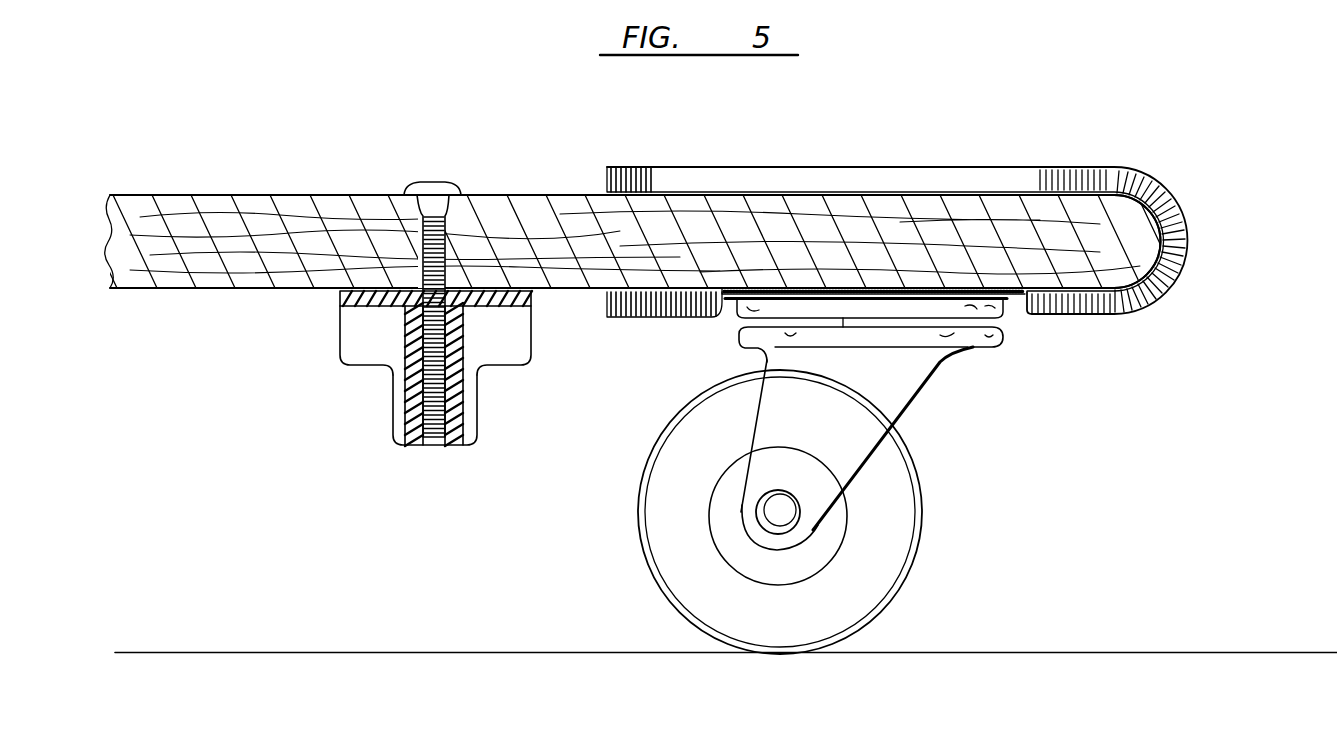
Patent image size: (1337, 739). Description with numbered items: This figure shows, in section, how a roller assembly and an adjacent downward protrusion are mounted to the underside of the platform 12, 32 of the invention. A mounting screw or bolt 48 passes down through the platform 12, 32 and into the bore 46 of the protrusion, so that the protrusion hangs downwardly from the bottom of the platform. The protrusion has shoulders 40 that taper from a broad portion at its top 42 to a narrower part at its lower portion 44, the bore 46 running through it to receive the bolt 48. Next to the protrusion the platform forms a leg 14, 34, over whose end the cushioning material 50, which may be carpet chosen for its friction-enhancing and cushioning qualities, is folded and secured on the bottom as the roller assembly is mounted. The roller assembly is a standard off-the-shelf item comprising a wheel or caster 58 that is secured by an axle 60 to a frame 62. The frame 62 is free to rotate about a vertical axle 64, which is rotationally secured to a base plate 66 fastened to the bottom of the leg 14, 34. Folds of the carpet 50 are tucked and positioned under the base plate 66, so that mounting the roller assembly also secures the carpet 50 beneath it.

The platform 12 is at (700, 185).
The platform 32 is at (700, 237).
The leg 14 is at (1220, 237).
The leg 34 is at (1145, 236).
The cushioning material 50 is at (1113, 172).
The shoulders 40 is at (432, 347).
The top 42 is at (358, 345).
The lower portion 44 is at (402, 407).
The bore 46 is at (453, 418).
The mounting screw 48 is at (433, 437).
The base plate 66 is at (740, 311).
The vertical axle 64 is at (893, 316).
The frame 62 is at (880, 398).
The wheel 58 is at (887, 586).
The axle 60 is at (768, 512).